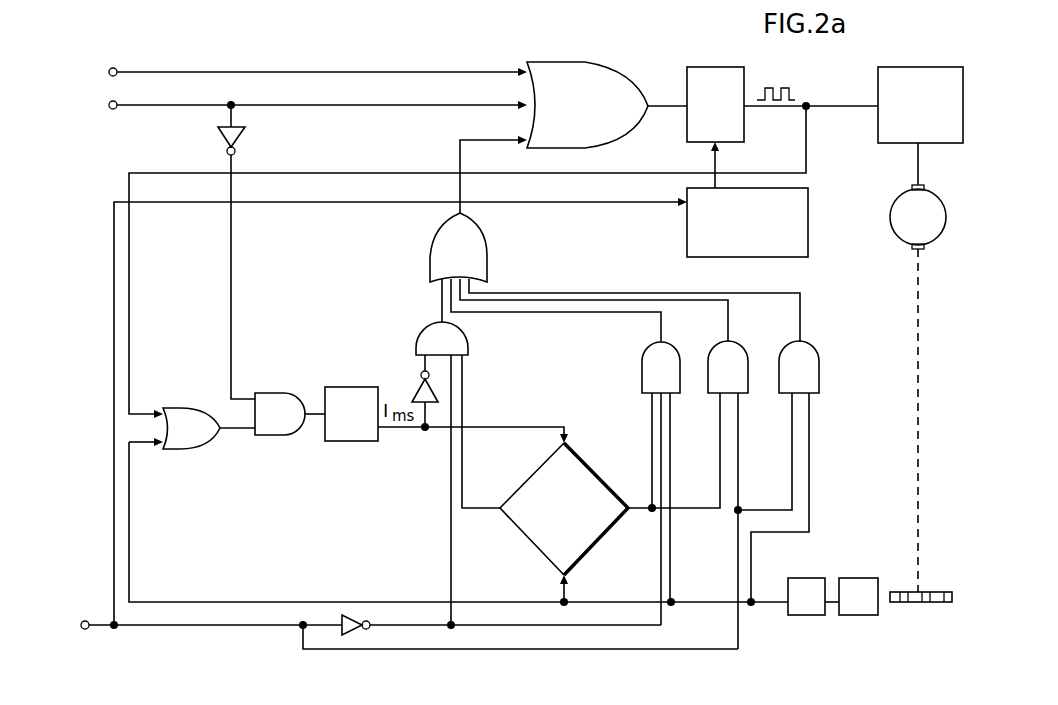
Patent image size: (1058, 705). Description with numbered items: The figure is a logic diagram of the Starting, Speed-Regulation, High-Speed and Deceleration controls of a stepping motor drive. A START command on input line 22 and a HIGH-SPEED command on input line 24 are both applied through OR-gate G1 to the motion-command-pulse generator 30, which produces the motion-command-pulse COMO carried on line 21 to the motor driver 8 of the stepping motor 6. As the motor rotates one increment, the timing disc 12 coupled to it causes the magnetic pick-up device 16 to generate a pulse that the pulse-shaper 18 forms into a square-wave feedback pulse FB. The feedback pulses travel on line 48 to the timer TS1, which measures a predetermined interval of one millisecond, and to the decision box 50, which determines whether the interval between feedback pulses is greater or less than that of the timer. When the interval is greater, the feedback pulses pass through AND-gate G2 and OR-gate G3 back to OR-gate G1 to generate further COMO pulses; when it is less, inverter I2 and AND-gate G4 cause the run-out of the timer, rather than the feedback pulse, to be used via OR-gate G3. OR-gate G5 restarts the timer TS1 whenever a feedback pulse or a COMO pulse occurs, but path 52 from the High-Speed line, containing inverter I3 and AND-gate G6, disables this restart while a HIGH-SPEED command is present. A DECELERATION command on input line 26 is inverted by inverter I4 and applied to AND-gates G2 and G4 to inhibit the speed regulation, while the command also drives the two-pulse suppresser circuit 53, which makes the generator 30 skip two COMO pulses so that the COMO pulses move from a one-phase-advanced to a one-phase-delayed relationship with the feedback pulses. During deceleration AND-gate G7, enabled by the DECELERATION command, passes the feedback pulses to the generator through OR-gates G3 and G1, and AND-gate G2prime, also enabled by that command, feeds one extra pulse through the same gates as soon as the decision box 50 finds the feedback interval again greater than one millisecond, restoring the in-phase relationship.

The START input line 22 is at (180, 69).
The High-Speed input line 24 is at (187, 107).
The motion-command-pulse generator 30 is at (695, 67).
The COMO signal line 21 is at (839, 108).
The motor driver circuit 8 is at (893, 144).
The stepping motor 6 is at (898, 237).
The 2-pulse suppresser circuit 53 is at (808, 235).
The path 52 is at (231, 237).
The decision box 50 is at (530, 476).
The feedback line 48 is at (240, 602).
The DECELERATION input line 26 is at (220, 628).
The pulse-shaper 18 is at (797, 578).
The magnetic pick-up device 16 is at (855, 578).
The timing disc 12 is at (908, 603).
The OR-gate G1 is at (607, 90).
The AND-gate G2 is at (667, 353).
The AND-gate G2prime is at (750, 481).
The OR-gate G3 is at (471, 246).
The AND-gate G4 is at (427, 332).
The OR-gate G5 is at (201, 412).
The AND-gate G6 is at (290, 397).
The AND-gate G7 is at (792, 457).
The inverter I2 is at (417, 396).
The inverter I3 is at (244, 130).
The inverter I4 is at (340, 620).
The timer TS1 is at (351, 414).